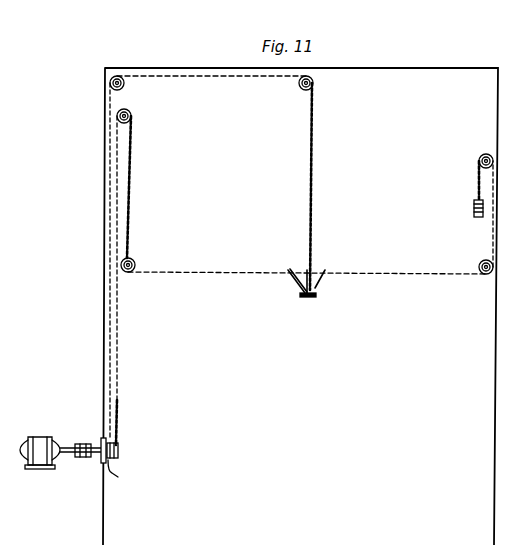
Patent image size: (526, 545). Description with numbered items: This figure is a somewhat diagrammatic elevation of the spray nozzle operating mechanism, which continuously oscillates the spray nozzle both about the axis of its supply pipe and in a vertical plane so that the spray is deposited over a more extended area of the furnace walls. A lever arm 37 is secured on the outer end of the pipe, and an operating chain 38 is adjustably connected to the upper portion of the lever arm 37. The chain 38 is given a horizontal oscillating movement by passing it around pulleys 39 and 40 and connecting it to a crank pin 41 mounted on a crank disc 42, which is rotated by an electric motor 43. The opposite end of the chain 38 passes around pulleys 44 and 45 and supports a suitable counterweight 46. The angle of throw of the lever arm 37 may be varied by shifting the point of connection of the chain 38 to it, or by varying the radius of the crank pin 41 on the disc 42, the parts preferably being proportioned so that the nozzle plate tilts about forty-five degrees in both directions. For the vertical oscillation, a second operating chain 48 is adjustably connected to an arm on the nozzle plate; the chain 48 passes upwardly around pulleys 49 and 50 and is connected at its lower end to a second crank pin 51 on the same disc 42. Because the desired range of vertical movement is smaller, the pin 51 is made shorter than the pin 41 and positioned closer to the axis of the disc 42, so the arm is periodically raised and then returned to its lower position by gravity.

The lever arm 37 is at (300, 288).
The operating chain 38 is at (243, 272).
The pulley 39 is at (134, 260).
The pulley 40 is at (131, 118).
The crank pin 41 is at (123, 475).
The crank disc 42 is at (99, 456).
The electric motor 43 is at (41, 435).
The pulley 44 is at (480, 262).
The pulley 45 is at (480, 153).
The counterweight 46 is at (473, 208).
The operating chain 48 is at (312, 246).
The pulley 49 is at (300, 89).
The pulley 50 is at (124, 87).
The crank pin 51 is at (120, 443).